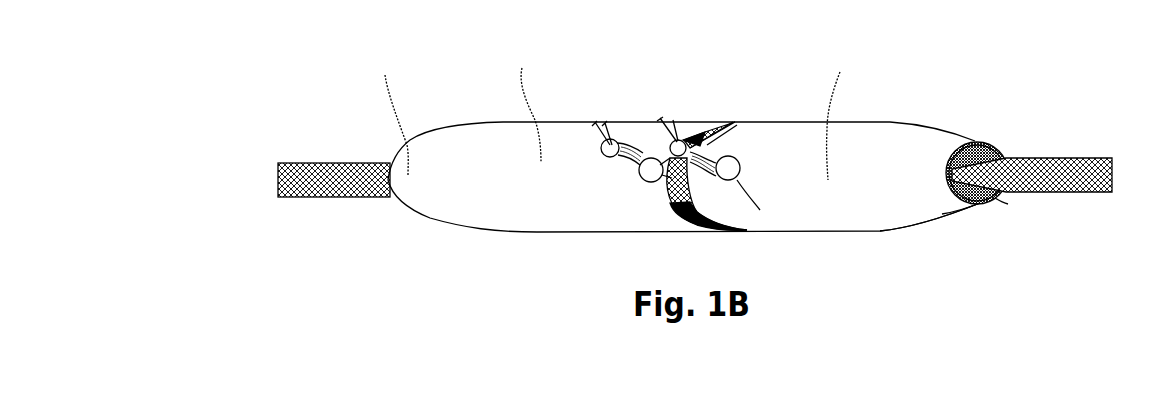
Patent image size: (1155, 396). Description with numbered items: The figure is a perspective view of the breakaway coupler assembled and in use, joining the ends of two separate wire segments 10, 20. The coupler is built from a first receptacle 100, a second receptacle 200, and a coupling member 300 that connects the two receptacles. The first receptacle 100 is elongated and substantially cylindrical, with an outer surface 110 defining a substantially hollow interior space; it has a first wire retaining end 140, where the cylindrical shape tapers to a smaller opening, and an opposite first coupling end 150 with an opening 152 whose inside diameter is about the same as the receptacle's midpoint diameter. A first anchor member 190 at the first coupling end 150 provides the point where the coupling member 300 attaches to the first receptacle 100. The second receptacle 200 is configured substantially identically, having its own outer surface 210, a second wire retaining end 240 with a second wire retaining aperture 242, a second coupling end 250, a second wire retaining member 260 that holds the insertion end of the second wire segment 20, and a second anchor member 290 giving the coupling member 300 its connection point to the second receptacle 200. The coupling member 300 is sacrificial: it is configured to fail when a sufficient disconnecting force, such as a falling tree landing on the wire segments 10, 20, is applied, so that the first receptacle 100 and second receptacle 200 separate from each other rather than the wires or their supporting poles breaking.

The first wire segment 10 is at (320, 172).
The second wire segment 20 is at (1043, 172).
The first receptacle 100 is at (537, 232).
The outer surface 110 is at (526, 106).
The first wire retaining end 140 is at (392, 117).
The first coupling end 150 is at (657, 195).
The opening 152 is at (672, 225).
The first anchor member 190 is at (595, 138).
The second receptacle 200 is at (858, 231).
The outer surface 210 is at (842, 116).
The second wire retaining end 240 is at (942, 212).
The second wire retaining aperture 242 is at (1002, 203).
The second coupling end 250 is at (720, 135).
The second wire retaining member 260 is at (973, 143).
The second anchor member 290 is at (760, 210).
The coupling member 300 is at (699, 137).